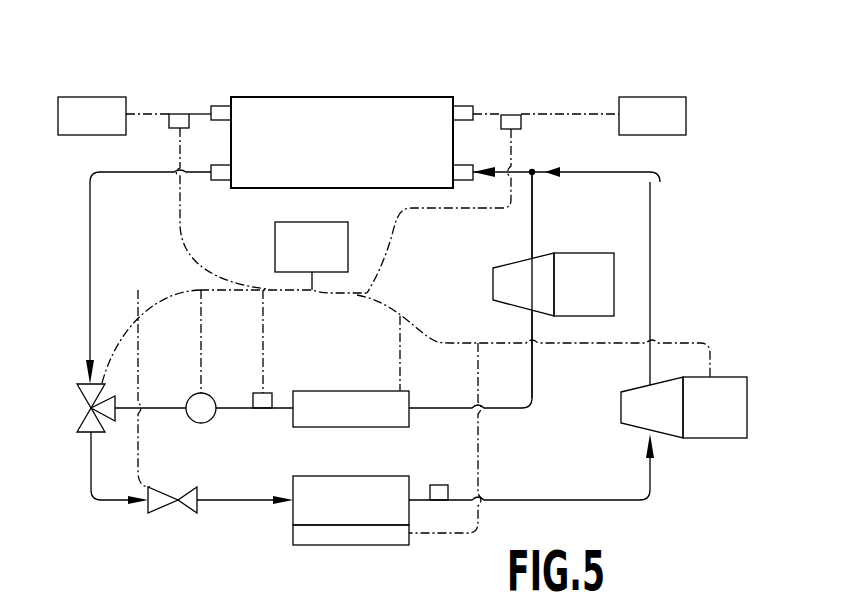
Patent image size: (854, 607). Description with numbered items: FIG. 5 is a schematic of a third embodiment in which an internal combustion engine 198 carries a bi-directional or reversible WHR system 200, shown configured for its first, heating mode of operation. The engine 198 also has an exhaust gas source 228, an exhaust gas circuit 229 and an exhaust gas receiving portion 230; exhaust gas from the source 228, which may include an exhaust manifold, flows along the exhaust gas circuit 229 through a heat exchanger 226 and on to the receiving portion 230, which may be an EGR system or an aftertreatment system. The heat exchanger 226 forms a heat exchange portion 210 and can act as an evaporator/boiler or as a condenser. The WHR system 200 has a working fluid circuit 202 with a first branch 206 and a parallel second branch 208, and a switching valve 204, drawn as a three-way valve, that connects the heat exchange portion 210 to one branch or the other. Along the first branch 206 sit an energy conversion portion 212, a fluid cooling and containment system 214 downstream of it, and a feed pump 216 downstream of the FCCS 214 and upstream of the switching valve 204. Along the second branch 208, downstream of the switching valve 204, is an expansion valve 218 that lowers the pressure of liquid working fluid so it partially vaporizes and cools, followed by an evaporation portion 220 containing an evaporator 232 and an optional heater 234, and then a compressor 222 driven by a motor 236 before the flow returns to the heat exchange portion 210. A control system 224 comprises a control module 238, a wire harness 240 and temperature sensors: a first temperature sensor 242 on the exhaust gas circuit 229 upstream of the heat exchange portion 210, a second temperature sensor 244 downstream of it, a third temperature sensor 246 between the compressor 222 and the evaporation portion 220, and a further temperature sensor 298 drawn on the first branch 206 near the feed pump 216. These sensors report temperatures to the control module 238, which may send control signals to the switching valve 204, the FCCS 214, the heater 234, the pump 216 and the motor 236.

The internal combustion engine 198 is at (47, 126).
The bi-directional or reversible WHR system 200 is at (722, 494).
The working fluid circuit 202 is at (82, 263).
The switching valve 204 is at (86, 414).
The first branch 206 is at (545, 386).
The second branch 208 is at (668, 496).
The heat exchange portion 210 is at (262, 76).
The energy conversion portion 212 is at (482, 258).
The fluid cooling and containment system 214 is at (348, 391).
The feed pump 216 is at (191, 396).
The expansion valve 218 is at (184, 512).
The evaporation portion 220 is at (312, 466).
The compressor 222 is at (626, 394).
The control system 224 is at (262, 232).
The heat exchanger 226 is at (360, 163).
The exhaust gas source 228 is at (108, 126).
The exhaust gas circuit 229 is at (138, 113).
The exhaust gas receiving portion 230 is at (668, 126).
The evaporator 232 is at (368, 507).
The heater or heat source 234 is at (306, 541).
The motor 236 is at (731, 417).
The control module 238 is at (328, 252).
The wire harness 240 is at (333, 295).
The first temperature sensor 242 is at (170, 120).
The second temperature sensor 244 is at (521, 129).
The third temperature sensor 246 is at (428, 488).
The flow sensor 298 is at (258, 393).